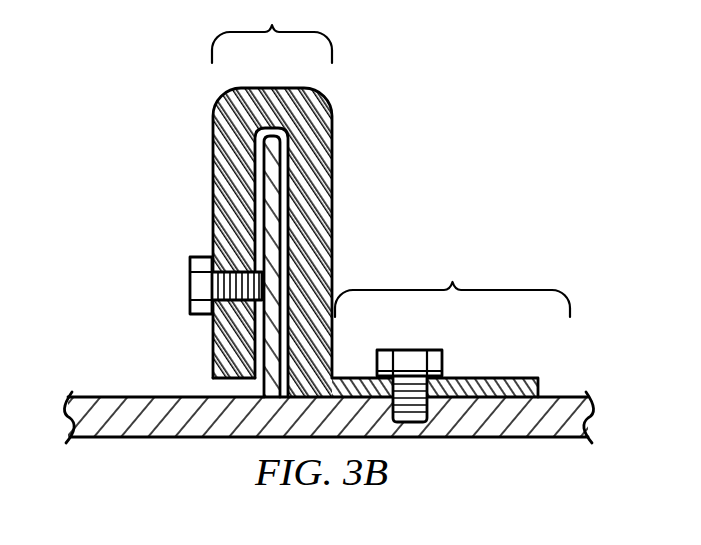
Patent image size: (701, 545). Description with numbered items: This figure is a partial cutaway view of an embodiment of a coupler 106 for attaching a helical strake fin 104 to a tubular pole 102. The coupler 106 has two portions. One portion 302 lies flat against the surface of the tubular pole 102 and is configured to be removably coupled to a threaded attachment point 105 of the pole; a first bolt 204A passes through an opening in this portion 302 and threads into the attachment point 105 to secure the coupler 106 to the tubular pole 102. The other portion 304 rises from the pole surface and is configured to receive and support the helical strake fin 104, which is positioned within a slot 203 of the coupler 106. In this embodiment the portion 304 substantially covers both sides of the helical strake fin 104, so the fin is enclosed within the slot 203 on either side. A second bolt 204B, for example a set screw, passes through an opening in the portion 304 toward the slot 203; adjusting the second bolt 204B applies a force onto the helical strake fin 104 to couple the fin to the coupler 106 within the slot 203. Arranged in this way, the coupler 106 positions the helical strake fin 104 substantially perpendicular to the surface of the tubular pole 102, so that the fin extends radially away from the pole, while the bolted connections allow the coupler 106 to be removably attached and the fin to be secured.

The tubular pole 102 is at (540, 428).
The helical strake fin 104 is at (273, 185).
The threaded attachment point 105 is at (425, 412).
The coupler 106 is at (127, 133).
The slot 203 is at (277, 130).
The first bolt 204A is at (412, 350).
The second bolt 204B is at (190, 284).
The portion of the coupler 302 is at (451, 327).
The portion of the coupler 304 is at (272, 200).